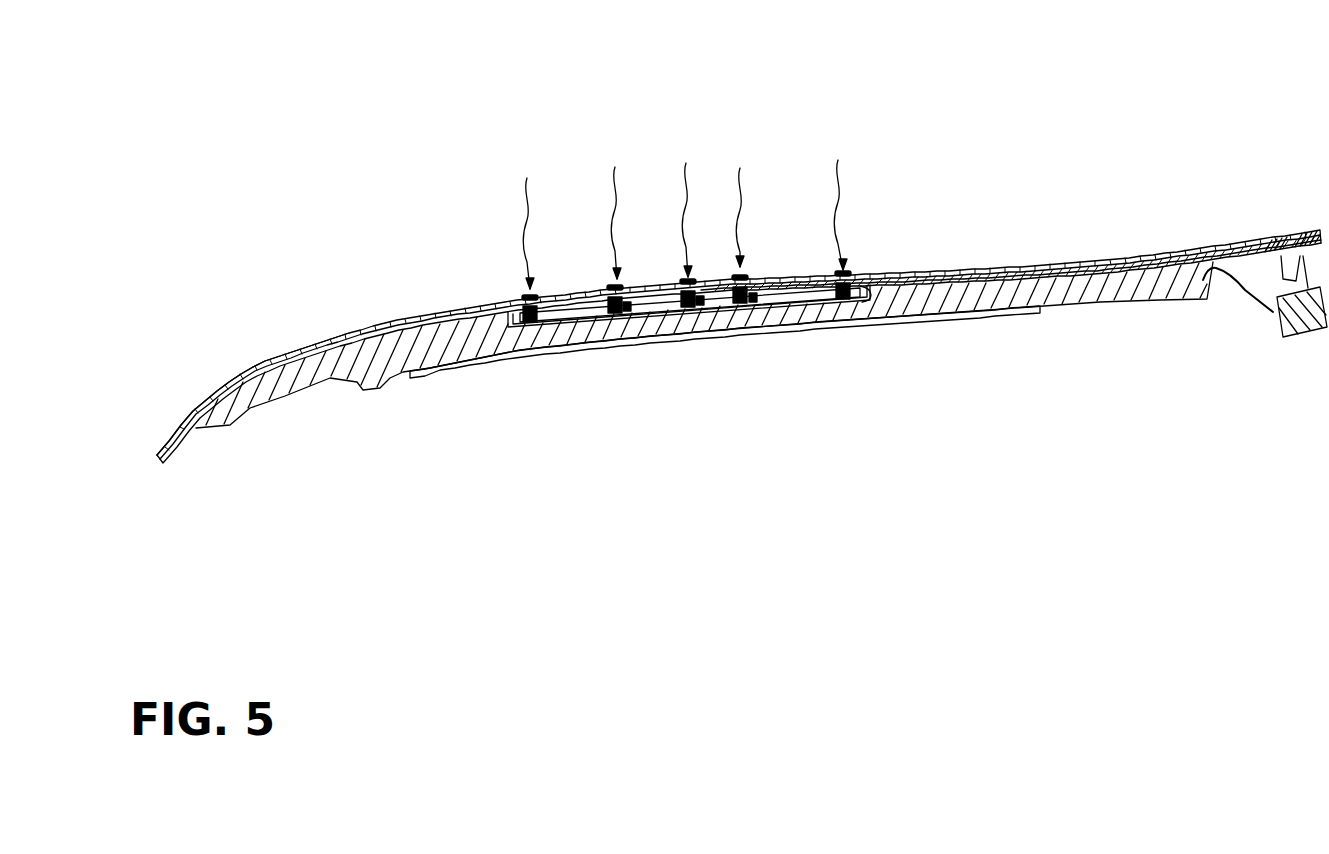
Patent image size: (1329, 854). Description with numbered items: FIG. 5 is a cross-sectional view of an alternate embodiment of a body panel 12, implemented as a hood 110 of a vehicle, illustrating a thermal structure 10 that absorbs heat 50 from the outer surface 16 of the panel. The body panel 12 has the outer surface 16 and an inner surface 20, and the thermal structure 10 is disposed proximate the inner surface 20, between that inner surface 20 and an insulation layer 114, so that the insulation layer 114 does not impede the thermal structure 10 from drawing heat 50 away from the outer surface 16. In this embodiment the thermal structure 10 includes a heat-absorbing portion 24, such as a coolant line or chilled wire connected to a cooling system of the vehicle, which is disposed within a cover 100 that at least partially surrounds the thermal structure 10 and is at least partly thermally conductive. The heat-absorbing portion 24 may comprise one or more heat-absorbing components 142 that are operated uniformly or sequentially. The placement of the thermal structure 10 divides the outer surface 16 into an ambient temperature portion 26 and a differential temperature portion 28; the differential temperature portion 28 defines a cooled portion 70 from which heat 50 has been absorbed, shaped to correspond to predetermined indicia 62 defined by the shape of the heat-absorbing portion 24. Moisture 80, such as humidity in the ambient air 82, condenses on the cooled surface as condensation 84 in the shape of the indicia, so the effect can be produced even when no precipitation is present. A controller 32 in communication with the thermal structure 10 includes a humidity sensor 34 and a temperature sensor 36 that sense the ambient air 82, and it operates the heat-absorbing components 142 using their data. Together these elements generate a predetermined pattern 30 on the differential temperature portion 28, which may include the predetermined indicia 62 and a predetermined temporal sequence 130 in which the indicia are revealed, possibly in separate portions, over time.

The thermal structure 10 is at (498, 317).
The body panel 12 is at (1088, 252).
The outer surface 16 is at (973, 272).
The inner surface 20 is at (458, 362).
The heat-absorbing portion 24 is at (577, 347).
The ambient temperature portion 26 is at (293, 350).
The differential temperature portion 28 is at (582, 283).
The predetermined pattern 30 is at (870, 265).
The controller 32 is at (1297, 347).
The humidity sensor 34 is at (1270, 240).
The temperature sensor 36 is at (1298, 228).
The heat 50 is at (845, 210).
The predetermined indicia 62 is at (515, 285).
The cooled portion 70 is at (630, 277).
The moisture 80 is at (432, 108).
The ambient air 82 is at (338, 81).
The condensation 84 is at (758, 265).
The cover 100 is at (815, 330).
The hood 110 is at (200, 387).
The insulation layer 114 is at (285, 382).
The predetermined temporal sequence 130 is at (496, 108).
The heat-absorbing components 142 is at (697, 333).